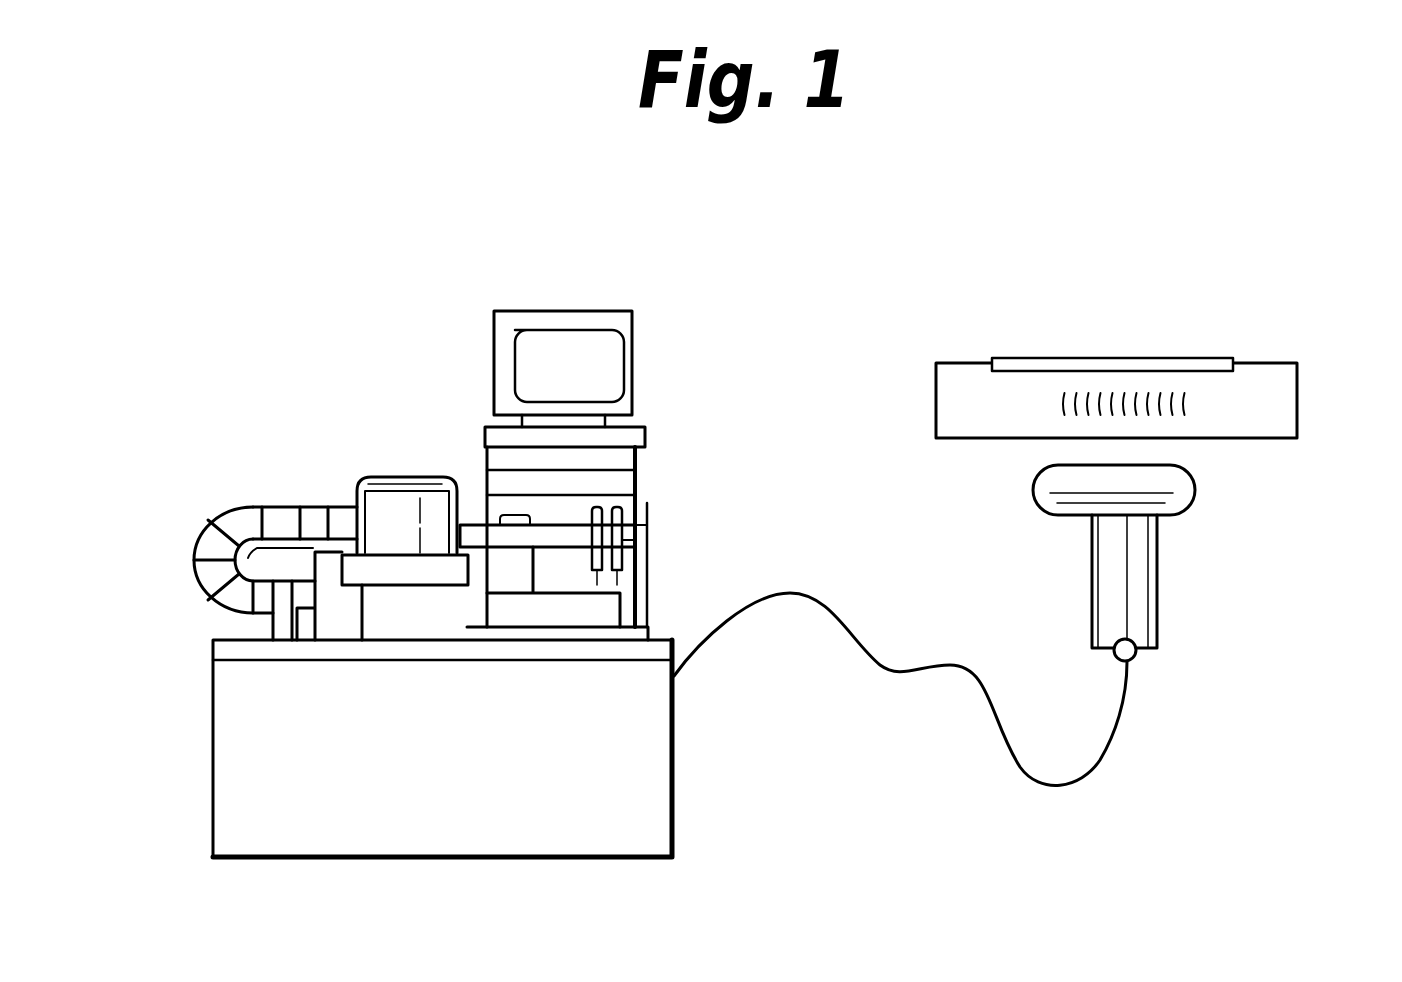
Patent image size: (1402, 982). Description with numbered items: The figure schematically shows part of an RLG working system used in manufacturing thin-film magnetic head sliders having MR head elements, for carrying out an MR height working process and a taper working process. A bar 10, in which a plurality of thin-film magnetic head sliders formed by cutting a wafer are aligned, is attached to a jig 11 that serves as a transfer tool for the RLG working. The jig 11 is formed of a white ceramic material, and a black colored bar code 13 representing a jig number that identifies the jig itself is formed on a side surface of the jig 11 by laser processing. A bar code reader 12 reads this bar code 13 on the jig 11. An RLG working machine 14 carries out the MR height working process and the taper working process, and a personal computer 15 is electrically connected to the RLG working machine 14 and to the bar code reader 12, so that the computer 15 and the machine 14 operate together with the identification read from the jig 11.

The bar 10 is at (1207, 357).
The jig 11 is at (1260, 405).
The bar code reader 12 is at (1135, 602).
The bar code 13 is at (1063, 397).
The RLG working machine 14 is at (648, 792).
The personal computer 15 is at (617, 463).